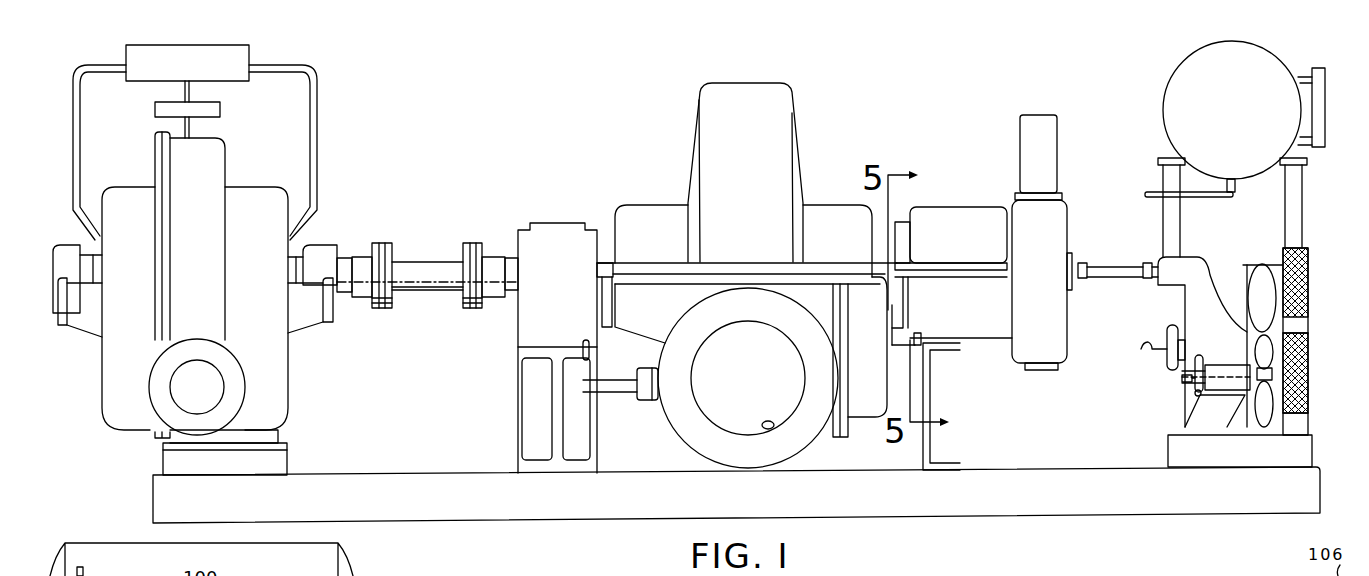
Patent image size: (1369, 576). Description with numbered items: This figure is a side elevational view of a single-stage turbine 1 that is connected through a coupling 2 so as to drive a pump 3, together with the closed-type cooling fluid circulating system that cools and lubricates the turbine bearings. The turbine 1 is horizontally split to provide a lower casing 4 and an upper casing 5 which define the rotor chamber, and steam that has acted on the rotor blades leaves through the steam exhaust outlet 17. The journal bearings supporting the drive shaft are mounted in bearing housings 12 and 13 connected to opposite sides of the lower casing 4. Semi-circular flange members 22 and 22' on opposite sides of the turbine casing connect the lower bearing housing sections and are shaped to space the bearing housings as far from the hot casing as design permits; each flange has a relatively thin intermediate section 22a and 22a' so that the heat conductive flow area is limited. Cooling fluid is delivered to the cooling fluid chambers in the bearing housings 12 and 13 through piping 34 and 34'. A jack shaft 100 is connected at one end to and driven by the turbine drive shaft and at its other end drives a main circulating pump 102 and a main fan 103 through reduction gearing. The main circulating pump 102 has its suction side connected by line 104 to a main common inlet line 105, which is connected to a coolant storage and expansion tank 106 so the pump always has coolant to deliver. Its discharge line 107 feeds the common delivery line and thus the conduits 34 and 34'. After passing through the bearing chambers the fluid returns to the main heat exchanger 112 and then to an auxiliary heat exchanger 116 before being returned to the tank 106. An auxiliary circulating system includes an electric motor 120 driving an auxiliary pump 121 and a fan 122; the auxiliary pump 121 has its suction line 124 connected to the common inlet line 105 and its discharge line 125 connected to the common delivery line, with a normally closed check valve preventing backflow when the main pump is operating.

The single-stage turbine 1 is at (806, 154).
The coupling 2 is at (412, 266).
The pump 3 is at (277, 374).
The lower casing 4 is at (655, 325).
The upper casing 5 is at (682, 219).
The bearing housing 12 is at (953, 218).
The bearing housing 13 is at (553, 233).
The steam exhaust outlet 17 is at (774, 427).
The semi-circular flange member 22 is at (901, 325).
The thin intermediate section 22a is at (871, 325).
The semi-circular flange member 22' is at (576, 311).
The thin intermediate section 22a' is at (574, 291).
The cooling fluid conduit 34 is at (939, 330).
The cooling fluid conduit 34' is at (605, 348).
The jack shaft 100 is at (1108, 268).
The main circulating pump 102 is at (1175, 362).
The main fan 103 is at (1262, 287).
The line 104 is at (1140, 350).
The main common inlet line 105 is at (1197, 199).
The coolant storage and expansion tank 106 is at (1256, 108).
The discharge line 107 is at (1170, 327).
The main heat exchanger 112 is at (1312, 300).
The auxiliary heat exchanger 116 is at (1306, 368).
The electric motor 120 is at (1237, 368).
The auxiliary pump 121 is at (1190, 386).
The fan 122 is at (1266, 398).
The suction line 124 is at (1186, 381).
The discharge line 125 is at (1196, 396).